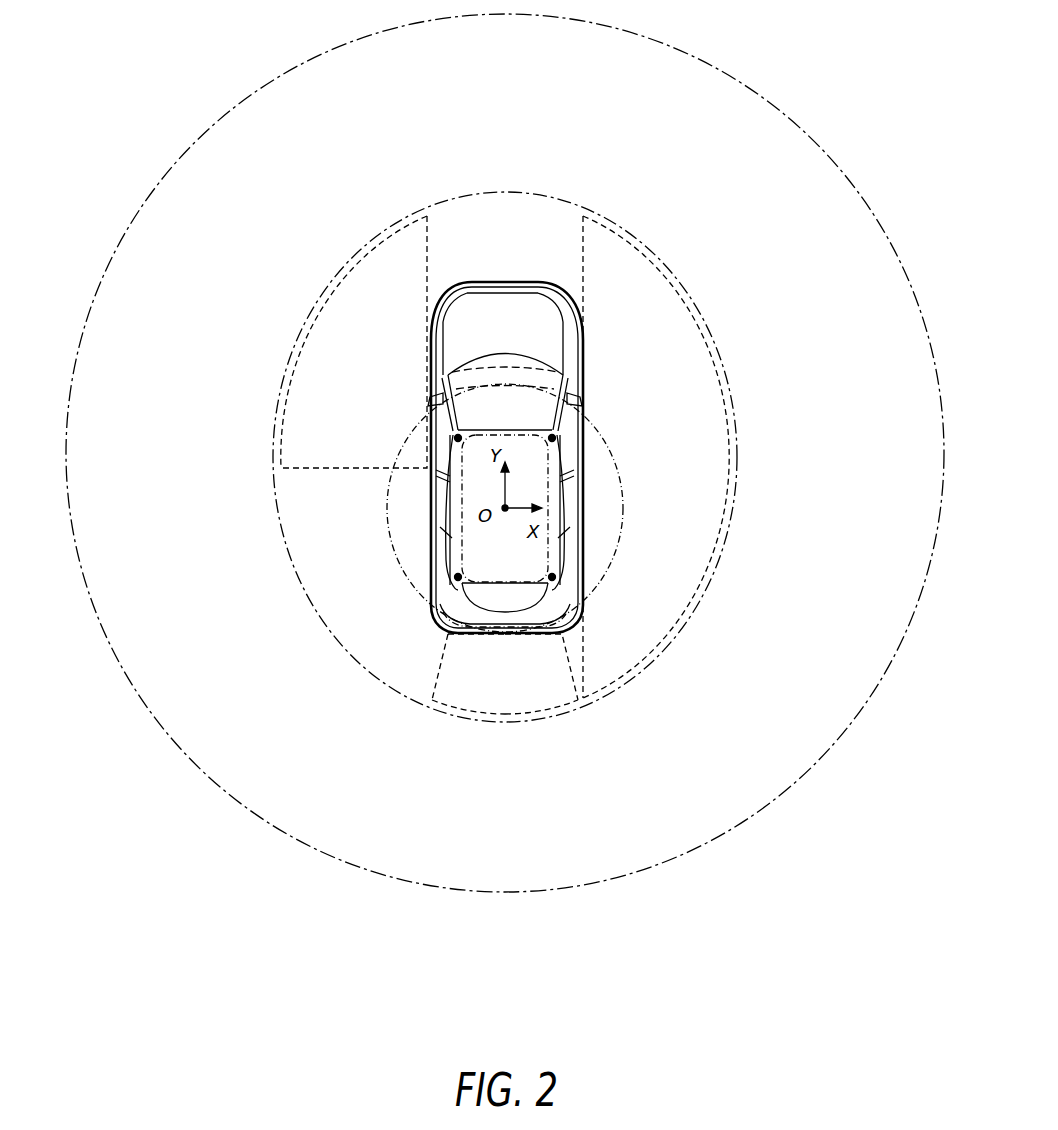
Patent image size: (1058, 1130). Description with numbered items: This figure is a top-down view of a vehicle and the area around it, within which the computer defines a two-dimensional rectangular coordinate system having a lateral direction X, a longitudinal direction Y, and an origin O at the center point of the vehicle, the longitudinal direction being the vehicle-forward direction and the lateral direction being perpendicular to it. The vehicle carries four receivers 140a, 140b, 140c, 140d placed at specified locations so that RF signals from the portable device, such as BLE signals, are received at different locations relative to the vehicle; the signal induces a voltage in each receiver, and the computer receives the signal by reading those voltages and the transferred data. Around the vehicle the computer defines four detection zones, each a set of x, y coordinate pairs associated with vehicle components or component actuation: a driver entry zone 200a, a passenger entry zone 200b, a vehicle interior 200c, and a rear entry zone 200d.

The receiver 140a is at (455, 436).
The receiver 140b is at (555, 436).
The receiver 140c is at (455, 575).
The receiver 140d is at (555, 575).
The driver entry zone 200a is at (370, 297).
The passenger entry zone 200b is at (640, 298).
The vehicle interior 200c is at (480, 636).
The rear entry zone 200d is at (537, 693).